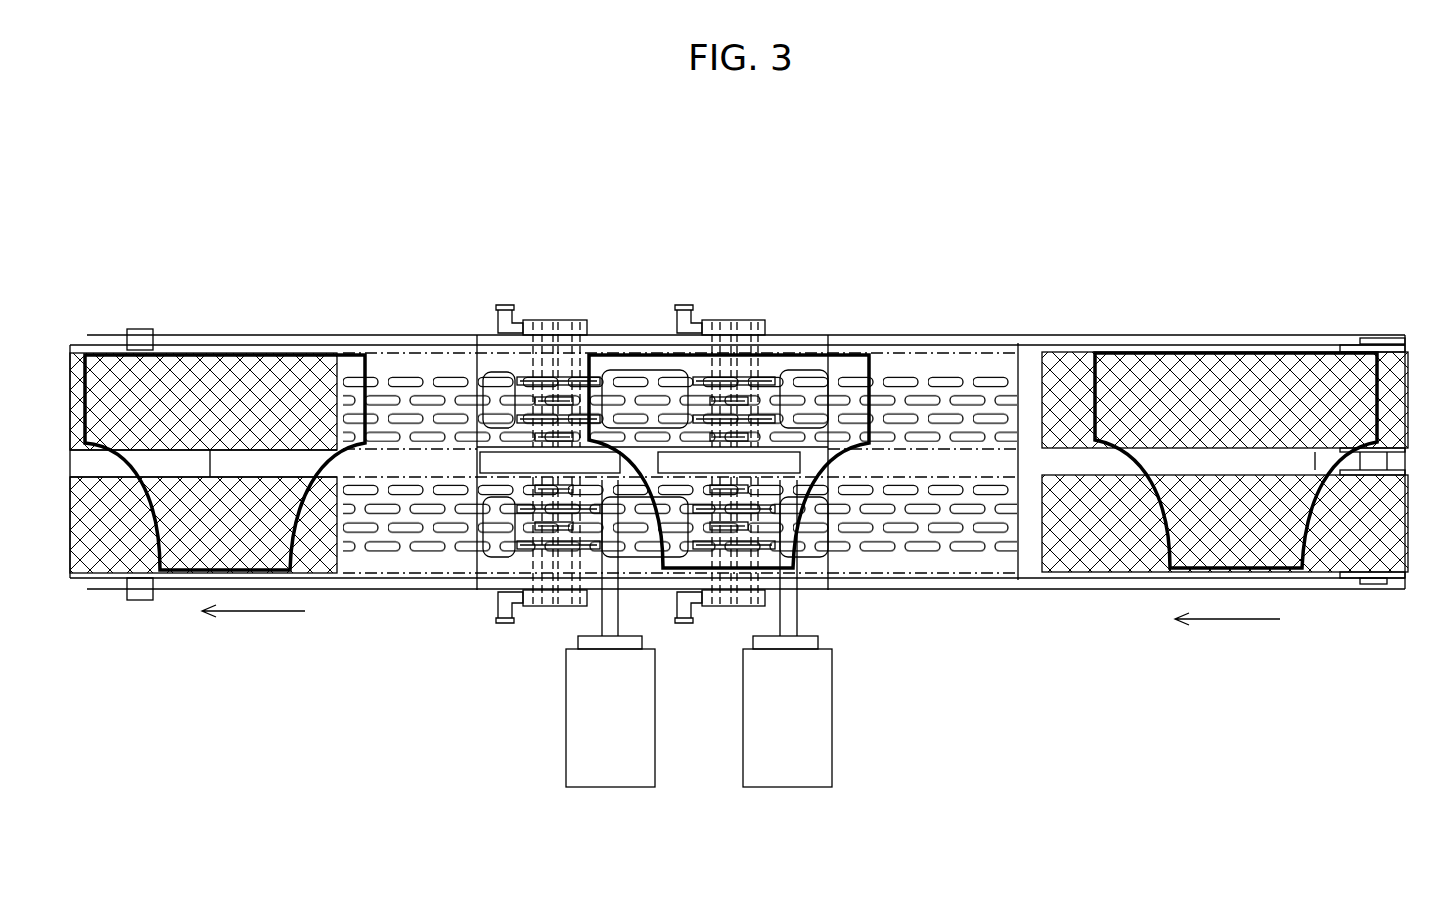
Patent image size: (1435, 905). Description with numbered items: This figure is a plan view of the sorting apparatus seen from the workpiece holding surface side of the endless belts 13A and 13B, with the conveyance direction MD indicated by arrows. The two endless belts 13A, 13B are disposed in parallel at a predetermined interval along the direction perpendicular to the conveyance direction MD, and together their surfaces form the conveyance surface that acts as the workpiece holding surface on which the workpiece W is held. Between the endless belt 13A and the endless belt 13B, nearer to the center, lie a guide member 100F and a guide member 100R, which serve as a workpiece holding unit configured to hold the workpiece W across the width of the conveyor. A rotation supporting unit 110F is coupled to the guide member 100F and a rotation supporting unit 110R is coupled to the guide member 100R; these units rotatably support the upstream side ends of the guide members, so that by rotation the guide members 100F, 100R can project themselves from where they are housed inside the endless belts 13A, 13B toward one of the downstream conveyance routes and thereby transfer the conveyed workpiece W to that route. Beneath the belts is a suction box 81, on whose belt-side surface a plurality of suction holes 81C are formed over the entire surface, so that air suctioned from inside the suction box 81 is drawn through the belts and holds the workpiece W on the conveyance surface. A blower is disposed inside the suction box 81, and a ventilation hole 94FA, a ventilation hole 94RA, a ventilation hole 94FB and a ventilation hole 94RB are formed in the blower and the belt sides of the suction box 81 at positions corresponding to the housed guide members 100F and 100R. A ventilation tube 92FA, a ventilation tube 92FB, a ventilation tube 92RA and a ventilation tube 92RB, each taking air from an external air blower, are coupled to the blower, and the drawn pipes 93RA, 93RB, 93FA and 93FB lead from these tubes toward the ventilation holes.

The workpiece W is at (382, 356).
The suction box 81 is at (963, 365).
The suction holes 81C is at (402, 380).
The endless belt 13A is at (1048, 365).
The endless belt 13B is at (1072, 553).
The ventilation tube 92RA is at (505, 305).
The ventilation tube 92RB is at (504, 625).
The ventilation tube 92FA is at (684, 305).
The ventilation tube 92FB is at (683, 625).
The rear upper supply pipes 93RA is at (577, 320).
The rear lower supply pipes 93RB is at (577, 606).
The front upper supply pipes 93FA is at (753, 320).
The front lower supply pipes 93FB is at (753, 606).
The ventilation hole 94RA is at (596, 376).
The ventilation hole 94RB is at (524, 548).
The ventilation hole 94FA is at (775, 378).
The ventilation hole 94FB is at (770, 548).
The guide member 100R is at (490, 463).
The guide member 100F is at (787, 463).
The rotation supporting unit 110R is at (619, 772).
The rotation supporting unit 110F is at (797, 767).
The conveyance direction MD is at (741, 628).